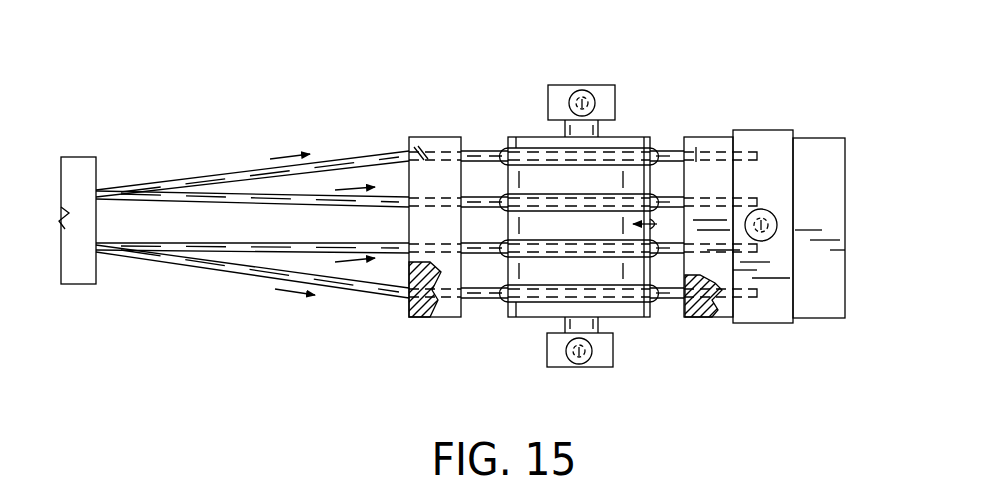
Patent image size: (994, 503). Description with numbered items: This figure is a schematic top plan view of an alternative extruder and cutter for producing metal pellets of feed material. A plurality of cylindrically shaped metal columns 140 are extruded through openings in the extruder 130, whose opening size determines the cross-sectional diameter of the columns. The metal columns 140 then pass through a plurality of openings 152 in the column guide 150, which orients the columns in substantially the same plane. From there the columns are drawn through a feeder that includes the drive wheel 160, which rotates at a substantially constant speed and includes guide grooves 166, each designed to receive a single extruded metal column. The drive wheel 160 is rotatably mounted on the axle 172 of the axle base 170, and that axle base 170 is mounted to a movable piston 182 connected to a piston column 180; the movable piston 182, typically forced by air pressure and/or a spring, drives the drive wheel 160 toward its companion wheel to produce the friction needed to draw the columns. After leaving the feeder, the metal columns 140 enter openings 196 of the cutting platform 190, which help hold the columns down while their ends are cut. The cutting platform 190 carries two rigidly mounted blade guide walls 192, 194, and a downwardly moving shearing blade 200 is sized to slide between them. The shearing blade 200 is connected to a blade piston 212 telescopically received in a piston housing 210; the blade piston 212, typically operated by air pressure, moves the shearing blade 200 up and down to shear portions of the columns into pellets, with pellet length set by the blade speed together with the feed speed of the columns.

The extruder 130 is at (82, 166).
The metal columns 140 is at (247, 197).
The column guide 150 is at (435, 136).
The openings 152 is at (412, 138).
The drive wheel 160 is at (519, 322).
The guide groove 166 is at (560, 200).
The axle base 170 is at (602, 95).
The axle 172 is at (597, 135).
The piston column 180 is at (572, 92).
The movable piston 182 is at (582, 85).
The cutting platform 190 is at (775, 197).
The blade guide wall 192 is at (708, 137).
The blade guide wall 194 is at (828, 145).
The openings 196 is at (695, 140).
The shearing blade 200 is at (768, 143).
The piston housing 210 is at (772, 233).
The blade piston 212 is at (778, 220).